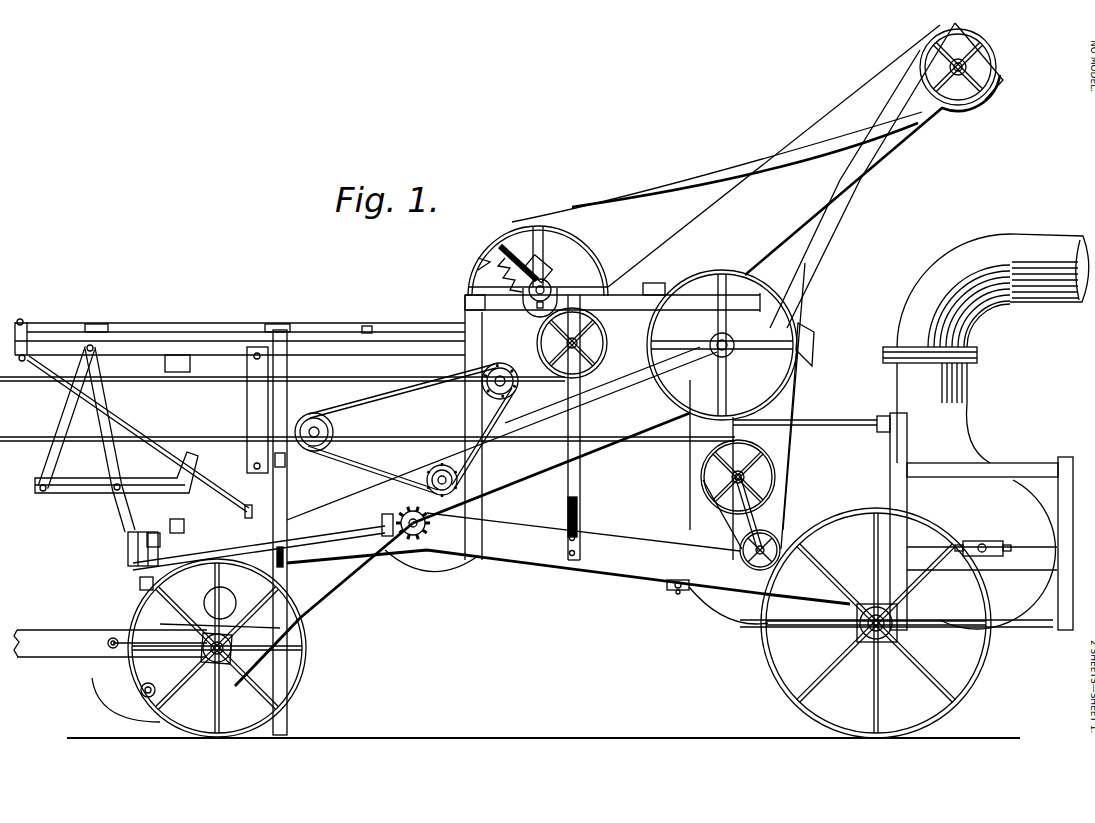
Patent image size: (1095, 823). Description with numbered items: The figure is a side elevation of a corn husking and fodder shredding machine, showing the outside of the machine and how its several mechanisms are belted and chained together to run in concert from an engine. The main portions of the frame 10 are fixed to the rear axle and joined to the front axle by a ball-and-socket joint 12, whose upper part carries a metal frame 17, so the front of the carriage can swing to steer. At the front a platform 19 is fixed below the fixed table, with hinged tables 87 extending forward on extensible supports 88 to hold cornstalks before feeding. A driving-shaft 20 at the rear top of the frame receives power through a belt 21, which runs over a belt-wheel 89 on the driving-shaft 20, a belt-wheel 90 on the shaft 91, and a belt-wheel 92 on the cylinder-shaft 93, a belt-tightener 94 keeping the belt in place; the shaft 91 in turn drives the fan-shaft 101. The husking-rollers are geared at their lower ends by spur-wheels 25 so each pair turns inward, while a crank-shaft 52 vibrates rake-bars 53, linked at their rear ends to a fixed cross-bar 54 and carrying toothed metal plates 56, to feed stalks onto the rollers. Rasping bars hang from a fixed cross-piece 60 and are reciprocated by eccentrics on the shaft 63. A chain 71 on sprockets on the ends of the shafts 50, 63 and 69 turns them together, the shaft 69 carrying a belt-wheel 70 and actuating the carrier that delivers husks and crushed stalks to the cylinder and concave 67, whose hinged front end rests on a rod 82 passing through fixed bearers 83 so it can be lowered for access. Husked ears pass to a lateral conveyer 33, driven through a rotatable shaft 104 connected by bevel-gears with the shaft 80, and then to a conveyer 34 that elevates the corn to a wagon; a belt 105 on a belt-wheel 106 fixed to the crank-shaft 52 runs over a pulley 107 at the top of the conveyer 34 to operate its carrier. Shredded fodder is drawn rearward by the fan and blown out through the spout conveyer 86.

The frame 10 is at (494, 530).
The ball-and-socket joint 12 is at (215, 608).
The metal frame 17 is at (236, 588).
The platform 19 is at (86, 492).
The driving-shaft 20 is at (716, 355).
The belt 21 is at (31, 383).
The spur-wheels 25 is at (176, 524).
The conveyer 33 is at (130, 558).
The conveyer 34 is at (110, 692).
The shaft 50 is at (501, 378).
The crank-shaft 52 is at (549, 287).
The rake-bars 53 is at (511, 261).
The cross-bar 54 is at (652, 292).
The toothed metal plates 56 is at (480, 264).
The cross-piece 60 is at (190, 364).
The shaft 63 is at (333, 431).
The concave 67 is at (738, 617).
The shaft 69 is at (432, 475).
The belt-wheel 70 is at (460, 563).
The chain 71 is at (481, 455).
The shaft 80 is at (431, 524).
The rod 82 is at (681, 580).
The bearers 83 is at (676, 591).
The spout conveyer 86 is at (986, 432).
The tables 87 is at (215, 325).
The extensible supports 88 is at (300, 664).
The belt-wheel 89 is at (800, 322).
The belt-wheel 90 is at (722, 476).
The shaft 91 is at (732, 478).
The belt-wheel 92 is at (780, 538).
The cylinder-shaft 93 is at (742, 543).
The belt-tightener 94 is at (597, 368).
The fan-shaft 101 is at (981, 544).
The rotatable shaft 104 is at (360, 545).
The belt 105 is at (711, 170).
The belt-wheel 106 is at (598, 258).
The pulley 107 is at (1000, 72).